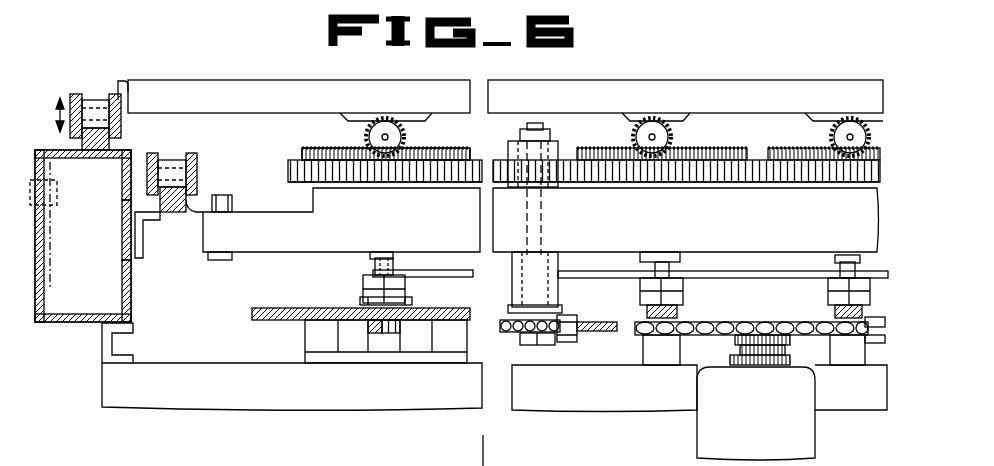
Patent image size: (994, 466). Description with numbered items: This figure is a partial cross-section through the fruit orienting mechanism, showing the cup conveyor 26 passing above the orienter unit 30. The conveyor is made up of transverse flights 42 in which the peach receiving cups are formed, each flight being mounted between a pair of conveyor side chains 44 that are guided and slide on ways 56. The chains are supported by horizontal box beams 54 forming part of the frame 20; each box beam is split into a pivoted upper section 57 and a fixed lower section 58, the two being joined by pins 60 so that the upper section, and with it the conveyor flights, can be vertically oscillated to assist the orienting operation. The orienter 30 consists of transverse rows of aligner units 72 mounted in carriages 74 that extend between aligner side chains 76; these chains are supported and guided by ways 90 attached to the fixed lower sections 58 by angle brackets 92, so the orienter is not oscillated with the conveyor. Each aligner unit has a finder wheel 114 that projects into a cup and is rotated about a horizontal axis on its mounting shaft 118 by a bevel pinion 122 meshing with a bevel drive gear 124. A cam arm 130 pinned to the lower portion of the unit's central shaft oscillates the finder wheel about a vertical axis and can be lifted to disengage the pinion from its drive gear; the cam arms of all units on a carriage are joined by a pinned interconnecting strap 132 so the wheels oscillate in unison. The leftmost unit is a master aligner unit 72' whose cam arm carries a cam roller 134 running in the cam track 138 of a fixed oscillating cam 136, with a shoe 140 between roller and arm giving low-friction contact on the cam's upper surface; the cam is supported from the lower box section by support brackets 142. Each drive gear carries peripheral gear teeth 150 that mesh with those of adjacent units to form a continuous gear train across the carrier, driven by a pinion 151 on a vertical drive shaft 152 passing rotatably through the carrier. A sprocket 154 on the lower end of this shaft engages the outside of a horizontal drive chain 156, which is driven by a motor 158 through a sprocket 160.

The frame 20 is at (65, 325).
The cup conveyor 26 is at (712, 84).
The orienter unit 30 is at (244, 323).
The transverse flight 42 is at (175, 80).
The conveyor side chain 44 is at (97, 95).
The horizontal box beam 54 is at (131, 301).
The way 56 is at (97, 149).
The upper box section 57 is at (122, 192).
The lower box section 58 is at (122, 238).
The pin 60 is at (30, 180).
The aligner unit 72 is at (686, 191).
The master aligner unit 72' is at (355, 150).
The carriage 74 is at (705, 250).
The aligner side chain 76 is at (172, 160).
The way 90 is at (179, 211).
The angle bracket 92 is at (137, 256).
The finder wheel 114 is at (366, 131).
The mounting shaft 118 is at (390, 140).
The bevel pinion 122 is at (388, 125).
The bevel drive gear 124 is at (356, 180).
The cam arm 130 is at (366, 290).
The interconnecting strap 132 is at (450, 277).
The cam roller 134 is at (394, 332).
The oscillating cam 136 is at (250, 310).
The cam track 138 is at (376, 326).
The shoe 140 is at (360, 303).
The support bracket 142 is at (282, 405).
The gear teeth 150 is at (455, 182).
The pinion 151 is at (495, 162).
The vertical drive shaft 152 is at (545, 223).
The sprocket 154 is at (505, 325).
The horizontal drive chain 156 is at (567, 342).
The motor 158 is at (770, 421).
The sprocket 160 is at (785, 326).